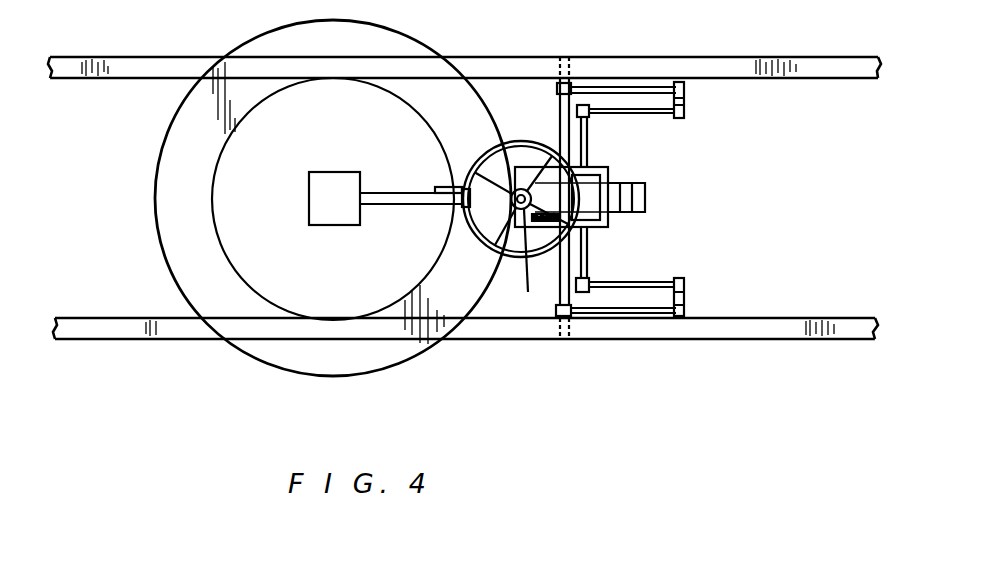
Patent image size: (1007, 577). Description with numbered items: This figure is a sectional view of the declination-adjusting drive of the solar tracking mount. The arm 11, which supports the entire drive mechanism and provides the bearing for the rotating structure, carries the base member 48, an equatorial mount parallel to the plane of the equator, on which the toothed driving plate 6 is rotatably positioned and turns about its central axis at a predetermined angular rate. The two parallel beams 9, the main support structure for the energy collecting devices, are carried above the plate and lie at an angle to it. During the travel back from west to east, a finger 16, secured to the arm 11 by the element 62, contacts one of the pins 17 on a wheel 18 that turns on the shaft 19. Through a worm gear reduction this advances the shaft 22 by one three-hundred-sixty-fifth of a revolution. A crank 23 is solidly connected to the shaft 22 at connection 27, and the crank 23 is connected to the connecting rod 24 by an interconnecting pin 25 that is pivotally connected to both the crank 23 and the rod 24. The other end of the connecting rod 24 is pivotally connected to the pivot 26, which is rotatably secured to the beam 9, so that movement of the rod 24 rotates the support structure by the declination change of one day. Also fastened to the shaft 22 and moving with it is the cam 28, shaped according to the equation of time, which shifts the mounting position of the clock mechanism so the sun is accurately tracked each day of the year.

The beam pair 9 is at (152, 58).
The driving plate 6 is at (266, 52).
The base member 48 is at (376, 104).
The arm 11 is at (338, 224).
The element 62 is at (422, 204).
The finger 16 is at (463, 208).
The pins 17 is at (501, 141).
The wheel 18 is at (517, 141).
The shaft 19 is at (540, 257).
The cam 28 is at (600, 224).
The pivot 26 is at (558, 57).
The connection 27 is at (572, 84).
The connecting rod 24 is at (620, 87).
The shaft 22 is at (586, 153).
The crank 23 is at (640, 114).
The pin 25 is at (685, 101).